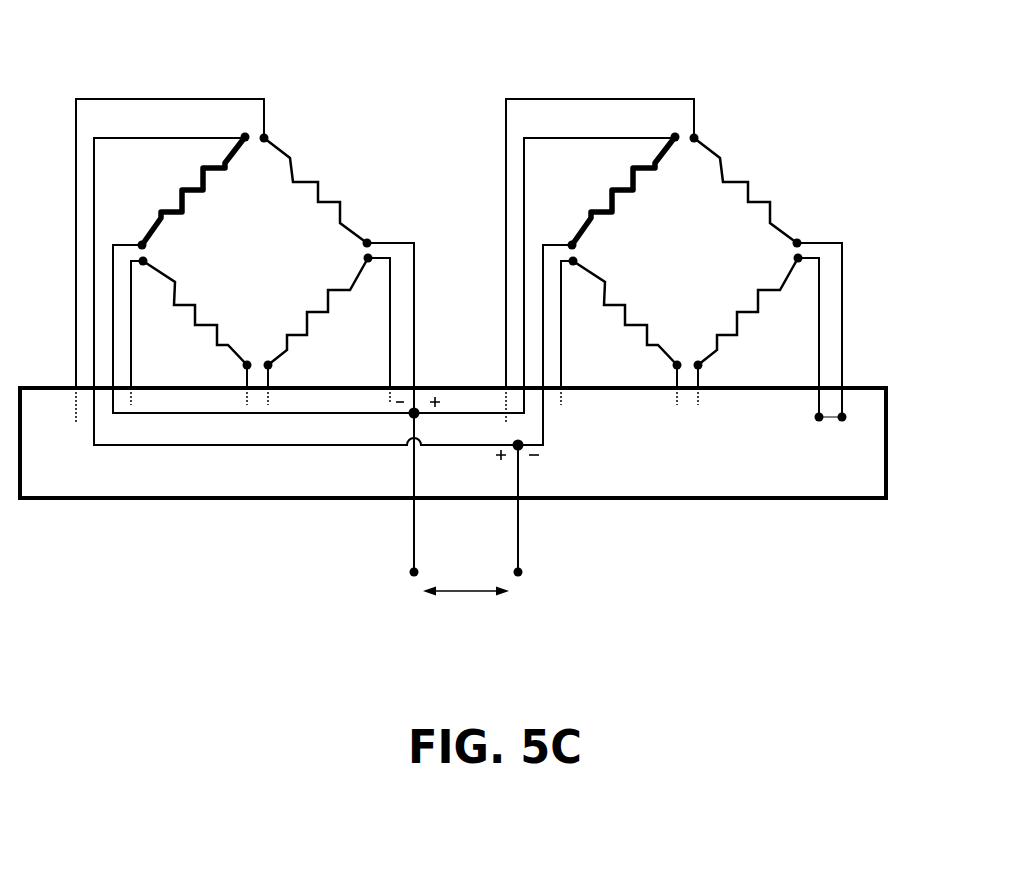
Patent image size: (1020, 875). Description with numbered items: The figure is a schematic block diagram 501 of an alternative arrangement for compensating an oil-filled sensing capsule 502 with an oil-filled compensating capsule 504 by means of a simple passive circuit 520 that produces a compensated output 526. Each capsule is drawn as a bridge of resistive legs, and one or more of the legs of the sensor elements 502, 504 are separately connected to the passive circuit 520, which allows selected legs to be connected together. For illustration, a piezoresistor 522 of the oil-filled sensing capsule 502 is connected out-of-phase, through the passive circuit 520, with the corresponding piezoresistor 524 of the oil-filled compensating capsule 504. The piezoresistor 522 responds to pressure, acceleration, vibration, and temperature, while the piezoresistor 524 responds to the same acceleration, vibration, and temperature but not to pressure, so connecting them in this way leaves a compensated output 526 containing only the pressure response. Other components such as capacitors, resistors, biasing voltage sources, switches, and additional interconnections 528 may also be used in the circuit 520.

The block diagram 501 is at (526, 68).
The oil-filled sensing capsule 502 is at (272, 223).
The oil-filled compensating capsule 504 is at (718, 239).
The passive circuit 520 is at (93, 479).
The piezoresistor 522 is at (194, 191).
The piezoresistor 524 is at (624, 191).
The compensated output 526 is at (472, 590).
The additional interconnections 528 is at (815, 436).